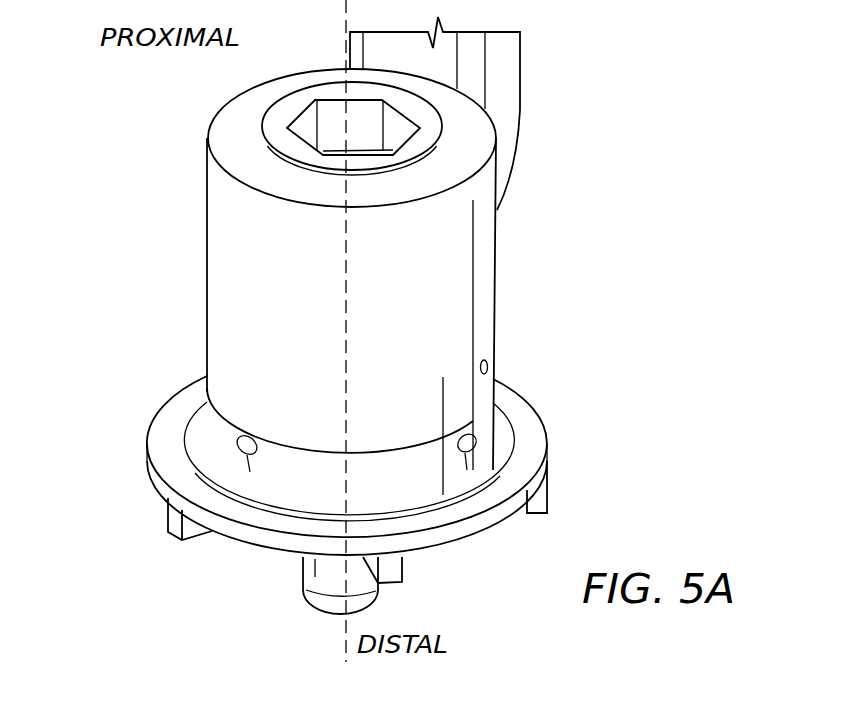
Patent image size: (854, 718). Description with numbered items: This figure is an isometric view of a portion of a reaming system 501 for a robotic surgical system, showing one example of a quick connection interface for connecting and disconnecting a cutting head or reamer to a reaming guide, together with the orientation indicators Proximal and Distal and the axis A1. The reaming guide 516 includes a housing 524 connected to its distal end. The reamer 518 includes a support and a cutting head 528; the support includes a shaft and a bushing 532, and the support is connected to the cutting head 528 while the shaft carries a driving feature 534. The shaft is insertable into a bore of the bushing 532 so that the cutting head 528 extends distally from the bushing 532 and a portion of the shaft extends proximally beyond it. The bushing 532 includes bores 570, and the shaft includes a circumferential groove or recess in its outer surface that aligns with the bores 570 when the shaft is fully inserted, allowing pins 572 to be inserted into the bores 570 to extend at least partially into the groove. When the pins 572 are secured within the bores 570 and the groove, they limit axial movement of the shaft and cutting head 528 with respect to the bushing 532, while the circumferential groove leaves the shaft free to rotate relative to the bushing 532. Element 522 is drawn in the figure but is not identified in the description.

The reaming system 501 is at (155, 108).
The reaming guide 516 is at (528, 195).
The reamer 518 is at (524, 434).
The extension shaft 522 is at (513, 45).
The housing 524 is at (472, 142).
The cutting head 528 is at (307, 585).
The bushing 532 is at (397, 488).
The driving feature 534 is at (337, 116).
The bores 570 is at (256, 453).
The pins 572 is at (237, 447).
The axis A1 is at (345, 623).